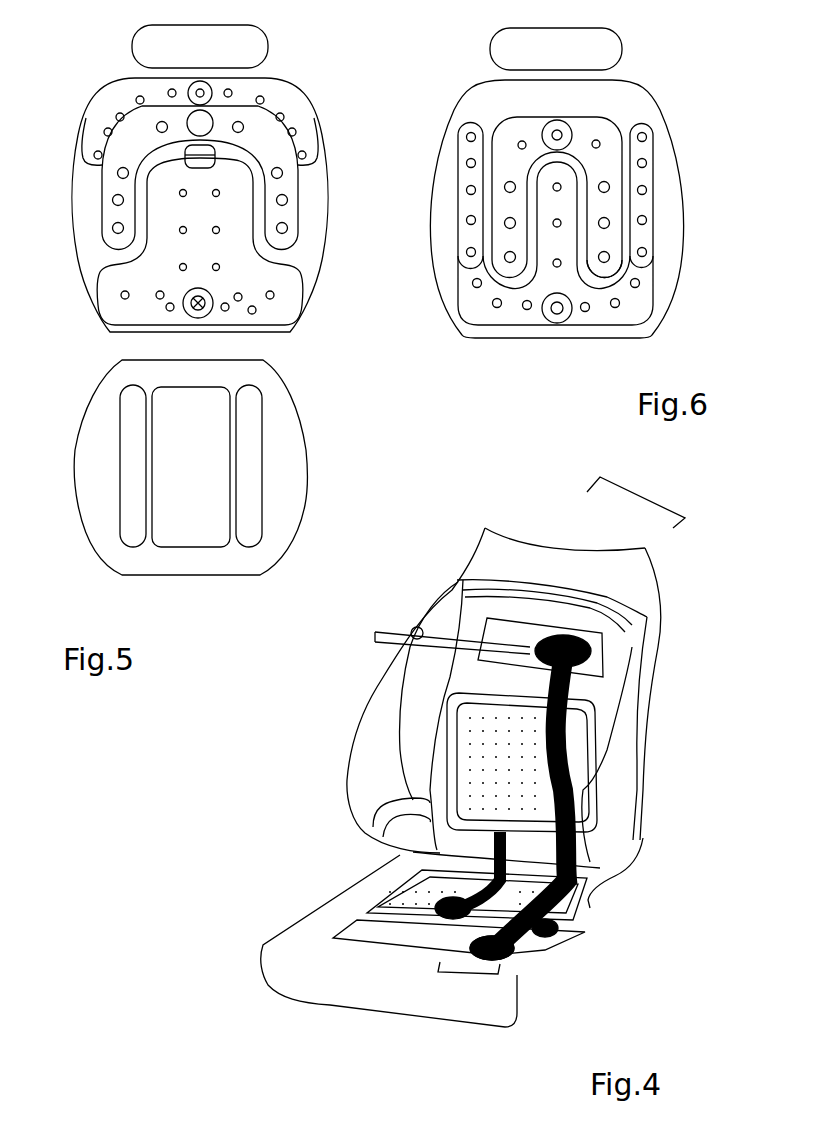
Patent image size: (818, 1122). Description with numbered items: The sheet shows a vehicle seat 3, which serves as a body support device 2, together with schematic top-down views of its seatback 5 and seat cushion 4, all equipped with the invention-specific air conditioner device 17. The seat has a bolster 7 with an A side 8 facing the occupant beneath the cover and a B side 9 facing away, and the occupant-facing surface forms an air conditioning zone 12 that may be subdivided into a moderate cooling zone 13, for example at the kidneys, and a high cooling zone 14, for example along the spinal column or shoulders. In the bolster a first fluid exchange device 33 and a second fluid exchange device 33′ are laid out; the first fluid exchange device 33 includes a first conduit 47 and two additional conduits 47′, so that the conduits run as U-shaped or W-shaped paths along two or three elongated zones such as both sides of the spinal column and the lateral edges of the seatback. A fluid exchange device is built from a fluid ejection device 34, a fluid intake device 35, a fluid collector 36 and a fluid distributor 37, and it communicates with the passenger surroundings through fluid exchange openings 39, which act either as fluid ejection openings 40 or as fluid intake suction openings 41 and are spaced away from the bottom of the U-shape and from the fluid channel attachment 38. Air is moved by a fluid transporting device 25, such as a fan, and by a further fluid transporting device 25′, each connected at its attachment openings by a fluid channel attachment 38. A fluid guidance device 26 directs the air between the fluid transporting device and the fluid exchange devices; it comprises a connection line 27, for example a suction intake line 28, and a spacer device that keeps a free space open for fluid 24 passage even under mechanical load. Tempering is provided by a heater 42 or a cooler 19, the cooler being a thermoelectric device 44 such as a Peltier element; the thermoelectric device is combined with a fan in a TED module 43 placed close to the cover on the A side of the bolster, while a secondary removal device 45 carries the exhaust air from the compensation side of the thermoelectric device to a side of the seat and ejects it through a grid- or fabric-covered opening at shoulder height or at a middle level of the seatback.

In FIG. 4, the body support device 2 is at (450, 690).
In FIG. 4, the vehicle seat 3 is at (357, 721).
In FIG. 5, the seat cushion 4 is at (318, 402).
In FIG. 4, the seat cushion 4 is at (250, 918).
In FIG. 5, the seatback 5 is at (330, 152).
In FIG. 6, the seatback 5 is at (447, 127).
In FIG. 4, the seatback 5 is at (345, 757).
In FIG. 5, the bolster 7 is at (233, 300).
In FIG. 6, the bolster 7 is at (538, 183).
In FIG. 4, the A side 8 is at (345, 786).
In FIG. 4, the B side 9 is at (662, 658).
In FIG. 5, the air conditioning zone 12 is at (245, 226).
In FIG. 6, the air conditioning zone 12 is at (504, 143).
In FIG. 4, the air conditioning zone 12 is at (473, 776).
In FIG. 5, the moderate cooling zone 13 is at (294, 91).
In FIG. 6, the moderate cooling zone 13 is at (613, 224).
In FIG. 5, the high cooling zone 14 is at (239, 200).
In FIG. 6, the high cooling zone 14 is at (577, 167).
In FIG. 4, the high cooling zone 14 is at (540, 612).
In FIG. 4, the air conditioner device 17 is at (636, 496).
In FIG. 4, the cooler 19 is at (522, 963).
In FIG. 4, the fluid passage 24 is at (380, 636).
In FIG. 5, the fluid transporting device 25 is at (176, 304).
In FIG. 6, the fluid transporting device 25 is at (551, 322).
In FIG. 4, the fluid transporting device 25 is at (508, 962).
In FIG. 4, the air inlet 25′ is at (562, 934).
In FIG. 5, the fluid guidance device 26 is at (205, 374).
In FIG. 4, the fluid guidance device 26 is at (592, 708).
In FIG. 4, the connection line 27 is at (586, 805).
In FIG. 4, the suction intake line 28 is at (520, 850).
In FIG. 5, the fluid exchange device 33 is at (245, 226).
In FIG. 6, the fluid exchange device 33 is at (630, 314).
In FIG. 4, the fluid exchange device 33 is at (599, 650).
In FIG. 6, the second fluid exchange device 33′ is at (674, 283).
In FIG. 4, the second fluid exchange device 33′ is at (583, 904).
In FIG. 5, the fluid ejection device 34 is at (318, 163).
In FIG. 6, the fluid ejection device 34 is at (614, 278).
In FIG. 5, the fluid intake device 35 is at (294, 314).
In FIG. 6, the fluid intake device 35 is at (649, 291).
In FIG. 5, the fluid collector 36 is at (199, 535).
In FIG. 6, the fluid collector 36 is at (512, 124).
In FIG. 5, the fluid distributor 37 is at (251, 518).
In FIG. 6, the fluid distributor 37 is at (657, 177).
In FIG. 6, the fluid channel attachment 38 is at (579, 134).
In FIG. 6, the fluid exchange opening 39 is at (617, 180).
In FIG. 6, the fluid ejection opening 40 is at (606, 187).
In FIG. 6, the fluid intake suction opening 41 is at (650, 160).
In FIG. 4, the heater 42 is at (561, 972).
In FIG. 4, the TED module 43 is at (458, 989).
In FIG. 4, the thermoelectric device 44 is at (561, 761).
In FIG. 4, the secondary removal device 45 is at (432, 622).
In FIG. 5, the conduit 47 is at (160, 168).
In FIG. 6, the conduit 47 is at (538, 163).
In FIG. 5, the additional conduit 47′ is at (90, 288).
In FIG. 6, the additional conduit 47′ is at (456, 252).